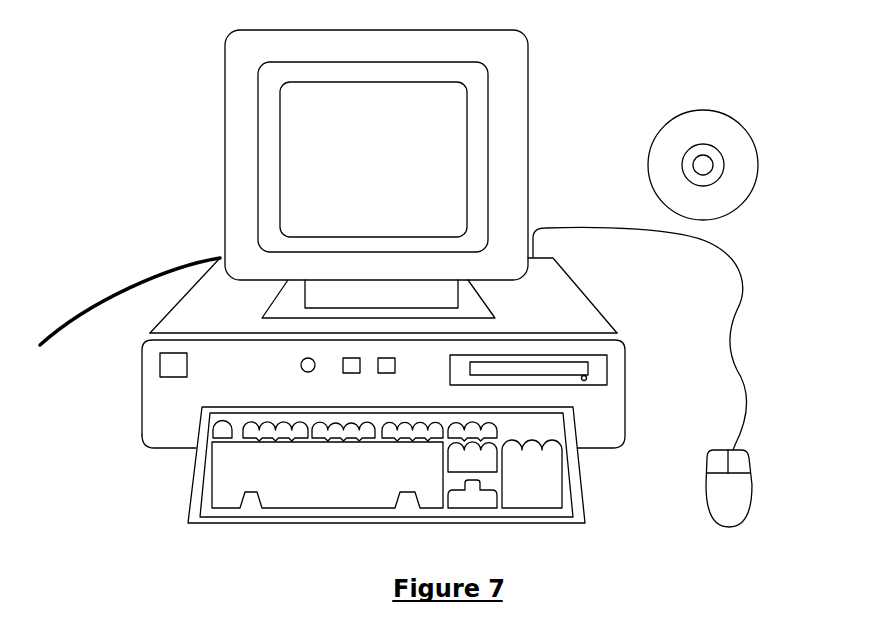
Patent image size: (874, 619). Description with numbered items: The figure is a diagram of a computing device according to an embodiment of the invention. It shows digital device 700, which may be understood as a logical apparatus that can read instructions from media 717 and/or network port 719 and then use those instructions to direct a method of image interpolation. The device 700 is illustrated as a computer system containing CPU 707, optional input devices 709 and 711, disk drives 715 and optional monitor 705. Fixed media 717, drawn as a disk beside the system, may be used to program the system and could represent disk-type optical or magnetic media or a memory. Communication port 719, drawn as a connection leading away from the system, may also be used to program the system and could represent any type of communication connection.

The digital device 700 is at (666, 49).
The monitor 705 is at (443, 132).
The CPU 707 is at (573, 307).
The input device 709 is at (273, 525).
The input device 711 is at (732, 505).
The disk drive 715 is at (607, 368).
The fixed media 717 is at (727, 117).
The communication port 719 is at (87, 297).